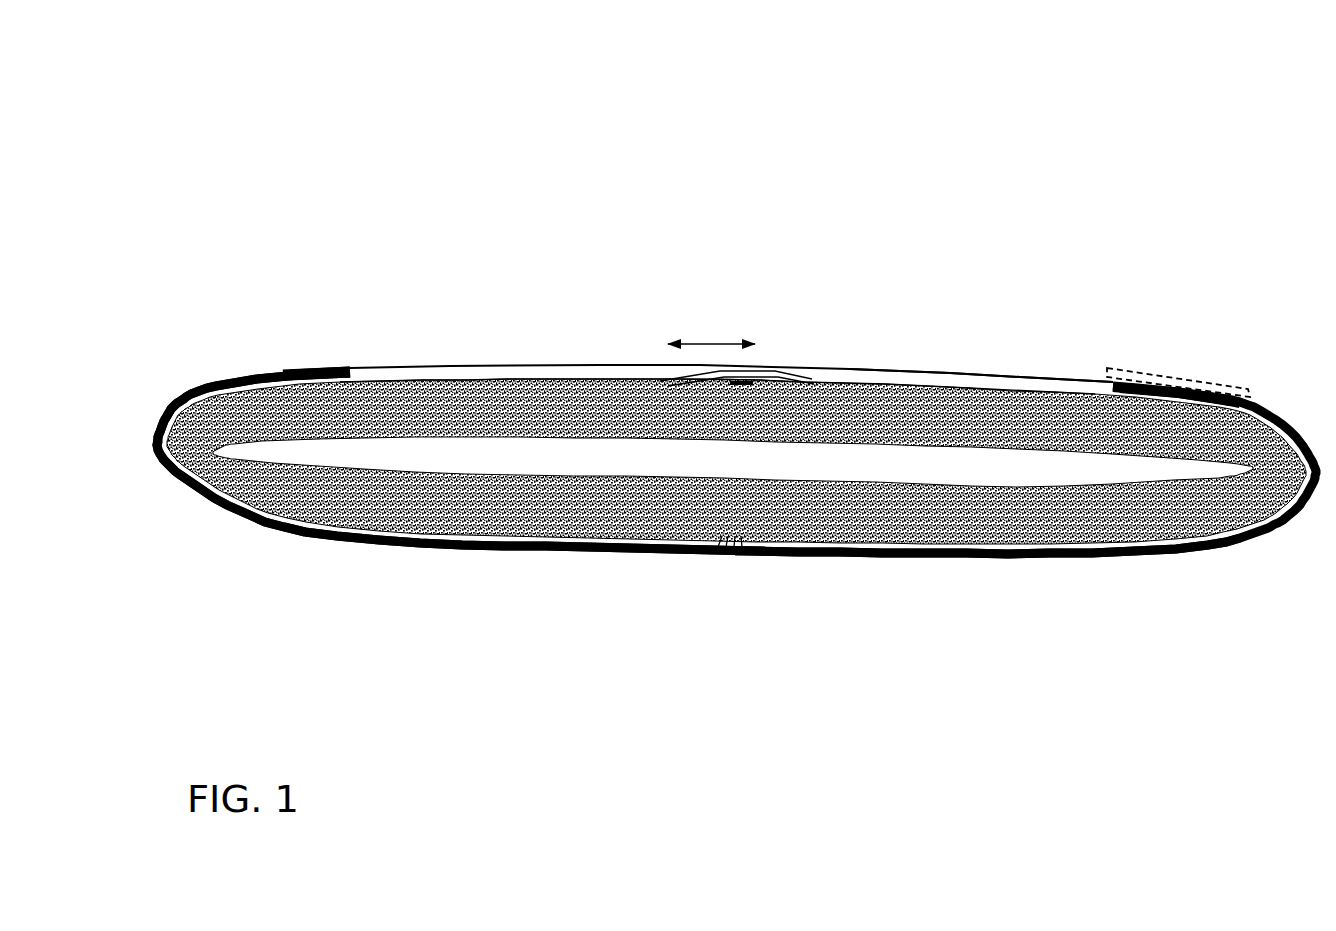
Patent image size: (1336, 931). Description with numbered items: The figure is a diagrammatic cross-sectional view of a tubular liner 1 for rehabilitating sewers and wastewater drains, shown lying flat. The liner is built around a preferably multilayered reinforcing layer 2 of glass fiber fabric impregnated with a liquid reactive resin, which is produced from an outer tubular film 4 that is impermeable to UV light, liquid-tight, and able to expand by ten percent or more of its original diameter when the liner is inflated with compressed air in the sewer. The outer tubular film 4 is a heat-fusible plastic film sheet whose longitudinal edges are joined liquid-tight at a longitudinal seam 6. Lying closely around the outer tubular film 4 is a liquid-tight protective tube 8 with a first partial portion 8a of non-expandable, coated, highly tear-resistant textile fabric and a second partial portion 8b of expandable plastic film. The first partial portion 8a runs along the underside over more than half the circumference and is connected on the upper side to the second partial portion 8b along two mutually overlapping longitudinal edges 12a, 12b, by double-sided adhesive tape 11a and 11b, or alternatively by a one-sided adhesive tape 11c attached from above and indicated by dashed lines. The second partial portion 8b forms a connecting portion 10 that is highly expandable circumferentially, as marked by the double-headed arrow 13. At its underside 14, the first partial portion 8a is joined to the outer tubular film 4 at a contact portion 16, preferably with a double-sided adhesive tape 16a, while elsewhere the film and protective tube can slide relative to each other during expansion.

The tubular liner 1 is at (803, 157).
The reinforcing layer 2 is at (563, 400).
The outer tubular film 4 is at (425, 385).
The longitudinal seam 6 is at (773, 367).
The protective tube 8 is at (235, 375).
The first partial portion 8a is at (433, 545).
The second partial portion 8b is at (985, 372).
The connecting portion 10 is at (542, 352).
The double-sided adhesive tape 11a is at (320, 372).
The double-sided adhesive tape 11b is at (1144, 385).
The adhesive tape 11c is at (1205, 384).
The longitudinal edge 12a is at (332, 360).
The longitudinal edge 12b is at (1160, 362).
The double-headed arrow 13 is at (712, 343).
The underside 14 is at (878, 557).
The contact portion 16 is at (723, 553).
The double-sided adhesive tape 16a is at (740, 555).